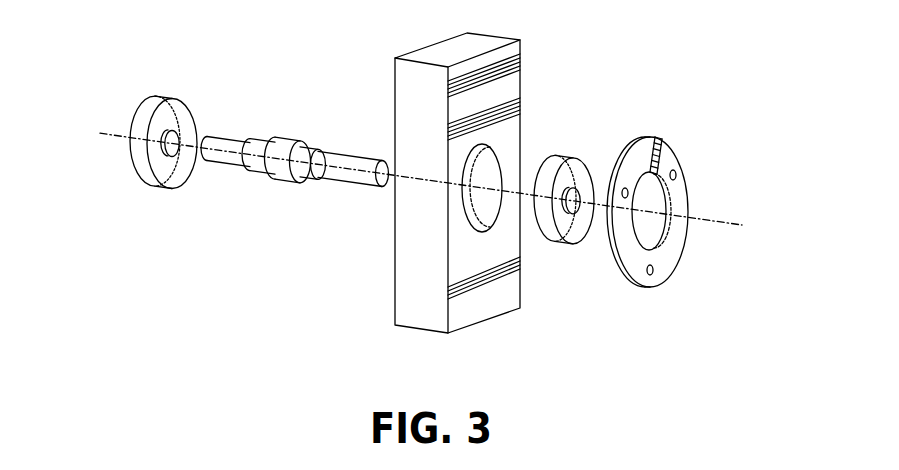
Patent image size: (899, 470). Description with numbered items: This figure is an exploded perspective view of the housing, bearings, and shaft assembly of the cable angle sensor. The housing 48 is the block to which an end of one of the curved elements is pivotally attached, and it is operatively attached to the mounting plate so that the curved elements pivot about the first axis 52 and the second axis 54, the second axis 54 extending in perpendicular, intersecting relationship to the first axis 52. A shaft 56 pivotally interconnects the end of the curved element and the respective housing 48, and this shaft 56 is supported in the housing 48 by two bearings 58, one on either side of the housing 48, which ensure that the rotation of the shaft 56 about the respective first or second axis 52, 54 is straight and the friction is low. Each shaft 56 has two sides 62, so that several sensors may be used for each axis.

The housing 48 is at (434, 56).
The first axis 52 is at (406, 144).
The second axis 54 is at (115, 130).
The shaft 56 is at (281, 186).
The bearing 58 is at (159, 97).
The side 62 is at (207, 160).